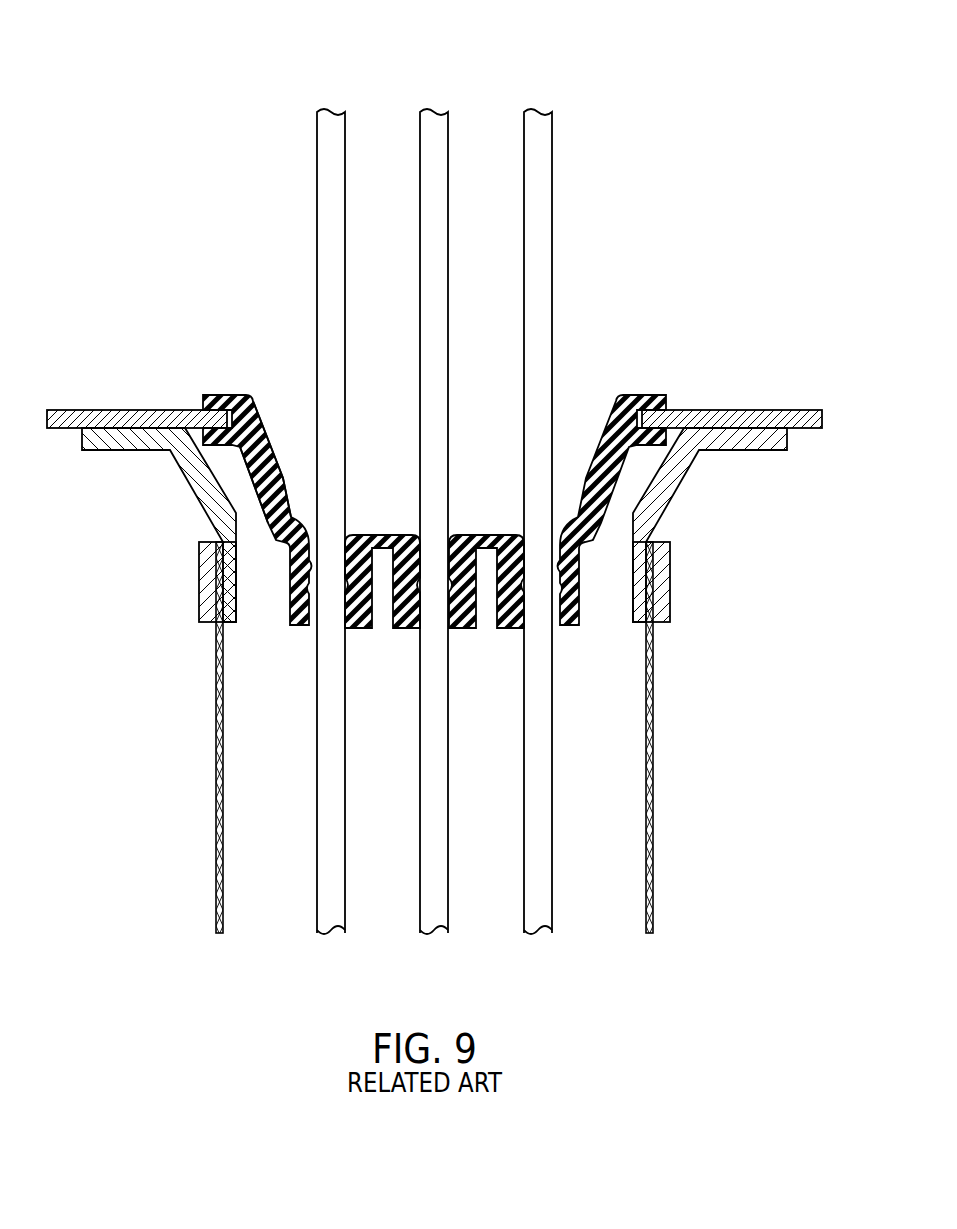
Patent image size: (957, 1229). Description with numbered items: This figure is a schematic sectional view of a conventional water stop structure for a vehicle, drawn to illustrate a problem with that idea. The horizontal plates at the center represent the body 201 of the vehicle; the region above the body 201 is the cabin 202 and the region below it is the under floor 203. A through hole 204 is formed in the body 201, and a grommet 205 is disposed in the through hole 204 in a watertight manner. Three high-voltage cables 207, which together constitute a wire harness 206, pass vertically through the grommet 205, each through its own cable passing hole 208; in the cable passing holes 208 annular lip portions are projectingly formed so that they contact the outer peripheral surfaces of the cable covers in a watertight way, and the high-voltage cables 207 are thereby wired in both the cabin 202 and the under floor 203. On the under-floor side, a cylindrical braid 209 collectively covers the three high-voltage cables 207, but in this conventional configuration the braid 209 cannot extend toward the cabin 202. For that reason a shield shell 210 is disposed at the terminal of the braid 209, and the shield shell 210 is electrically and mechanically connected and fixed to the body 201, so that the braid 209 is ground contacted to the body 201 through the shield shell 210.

The body 201 is at (83, 410).
The cabin 202 is at (328, 532).
The under floor 203 is at (400, 737).
The through hole 204 is at (241, 412).
The grommet 205 is at (250, 478).
The wire harness 206 is at (197, 902).
The high-voltage cables 207 is at (345, 933).
The cable passing holes 208 is at (570, 610).
The braid 209 is at (652, 803).
The shield shell 210 is at (670, 472).